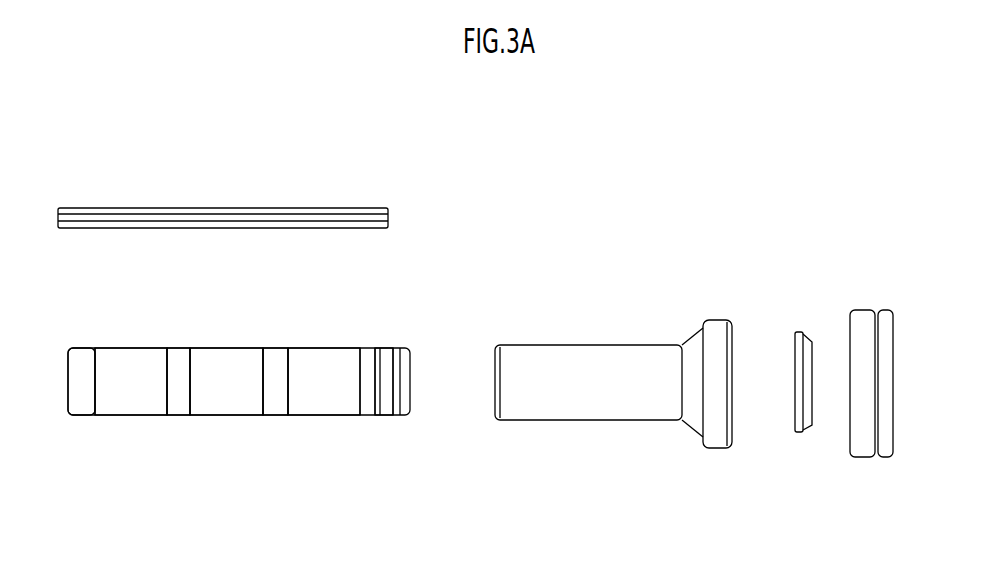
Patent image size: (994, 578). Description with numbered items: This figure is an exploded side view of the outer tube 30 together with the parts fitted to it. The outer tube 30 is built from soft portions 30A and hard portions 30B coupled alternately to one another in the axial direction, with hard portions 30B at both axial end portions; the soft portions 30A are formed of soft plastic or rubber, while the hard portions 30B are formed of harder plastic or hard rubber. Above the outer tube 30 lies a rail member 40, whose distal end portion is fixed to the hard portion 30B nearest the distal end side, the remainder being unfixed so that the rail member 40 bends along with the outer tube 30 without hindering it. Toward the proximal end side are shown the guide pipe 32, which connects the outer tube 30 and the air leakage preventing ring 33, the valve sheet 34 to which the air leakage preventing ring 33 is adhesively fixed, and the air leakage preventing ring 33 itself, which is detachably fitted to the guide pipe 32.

The rail member 40 is at (345, 200).
The outer tube 30 is at (224, 346).
The hard portion 30B is at (180, 352).
The soft portion 30A is at (233, 392).
The guide pipe 32 is at (588, 393).
The valve sheet 34 is at (803, 435).
The air leakage preventing ring 33 is at (860, 445).